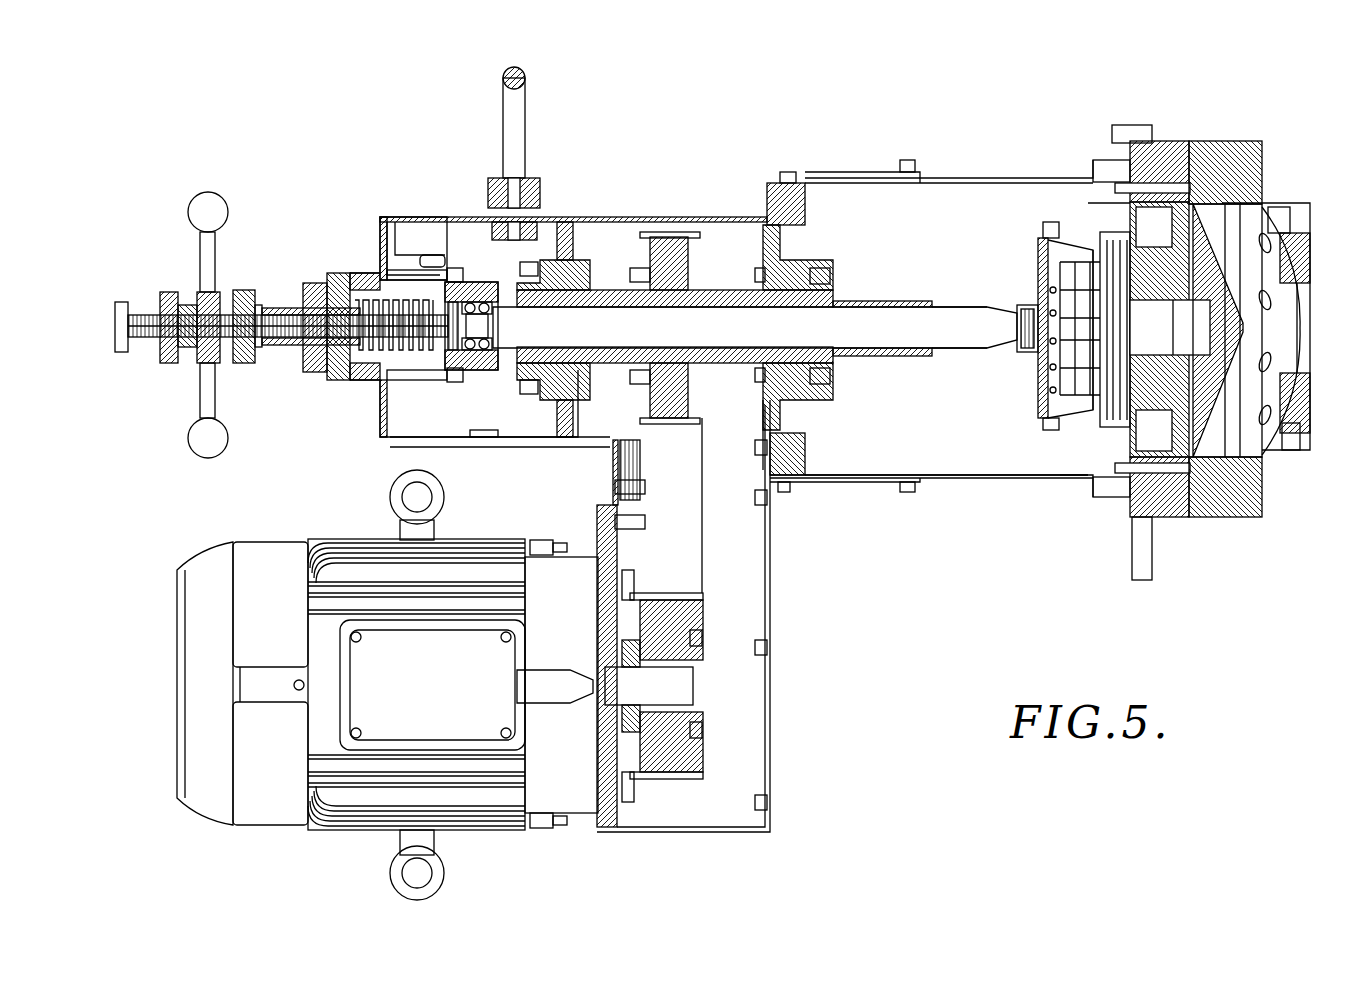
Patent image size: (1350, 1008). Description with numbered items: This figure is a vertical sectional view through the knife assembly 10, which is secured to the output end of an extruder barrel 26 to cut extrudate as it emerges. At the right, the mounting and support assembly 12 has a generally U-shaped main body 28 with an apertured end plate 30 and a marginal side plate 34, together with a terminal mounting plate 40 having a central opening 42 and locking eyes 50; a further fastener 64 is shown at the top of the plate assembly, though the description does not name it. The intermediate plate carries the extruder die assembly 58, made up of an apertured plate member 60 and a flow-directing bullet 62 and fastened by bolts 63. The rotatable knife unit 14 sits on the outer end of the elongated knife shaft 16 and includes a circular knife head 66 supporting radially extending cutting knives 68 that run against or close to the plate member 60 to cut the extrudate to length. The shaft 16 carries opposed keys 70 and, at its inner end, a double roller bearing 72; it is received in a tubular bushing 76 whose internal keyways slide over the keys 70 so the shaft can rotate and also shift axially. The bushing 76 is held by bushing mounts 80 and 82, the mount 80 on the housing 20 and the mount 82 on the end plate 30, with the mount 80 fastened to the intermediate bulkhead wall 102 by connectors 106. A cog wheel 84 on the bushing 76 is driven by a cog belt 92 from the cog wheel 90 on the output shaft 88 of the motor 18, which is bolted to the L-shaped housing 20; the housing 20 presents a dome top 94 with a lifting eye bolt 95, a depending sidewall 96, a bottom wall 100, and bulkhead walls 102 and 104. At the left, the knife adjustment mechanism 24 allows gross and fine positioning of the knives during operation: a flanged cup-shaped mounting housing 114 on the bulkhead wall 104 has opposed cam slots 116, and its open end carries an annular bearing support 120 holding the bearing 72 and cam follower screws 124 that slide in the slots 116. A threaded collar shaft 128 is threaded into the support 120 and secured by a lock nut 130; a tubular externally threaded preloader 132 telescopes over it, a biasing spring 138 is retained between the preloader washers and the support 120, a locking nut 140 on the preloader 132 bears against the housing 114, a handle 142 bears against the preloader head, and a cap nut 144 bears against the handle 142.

The knife assembly 10 is at (1145, 638).
The mounting and support assembly 12 is at (947, 153).
The rotatable knife unit 14 is at (1018, 240).
The knife shaft 16 is at (955, 352).
The motor 18 is at (205, 540).
The housing 20 is at (708, 203).
The knife adjustment mechanism 24 is at (265, 198).
The extruder barrel 26 is at (1300, 195).
The main body 28 is at (1000, 478).
The end plate 30 is at (800, 455).
The side plate 34 is at (935, 480).
The terminal mounting plate 40 is at (1205, 150).
The central opening 42 is at (1275, 215).
The locking eyes 50 is at (1100, 165).
The extruder die assembly 58 is at (1260, 420).
The apertured plate member 60 is at (1185, 480).
The flow-directing bullet 62 is at (1243, 328).
The bolts 63 is at (1158, 185).
The bolt 64 is at (1125, 128).
The knife head 66 is at (1040, 285).
The cutting knives 68 is at (1103, 230).
The keys 70 is at (588, 323).
The double roller bearing 72 is at (492, 332).
The tubular bushing 76 is at (880, 300).
The bushing mount 80 is at (590, 238).
The bushing mount 82 is at (812, 250).
The cog wheel 84 is at (672, 240).
The output shaft 88 is at (688, 683).
The cog wheel 90 is at (688, 746).
The cog belt 92 is at (705, 497).
The dome top 94 is at (633, 216).
The lifting eye bolt 95 is at (520, 105).
The sidewall 96 is at (770, 560).
The bottom wall 100 is at (395, 445).
The intermediate bulkhead wall 102 is at (603, 450).
The terminal bulkhead wall 104 is at (384, 245).
The connectors 106 is at (558, 420).
The mounting housing 114 is at (340, 385).
The cam slots 116 is at (418, 278).
The annular bearing support 120 is at (492, 385).
The cam follower screws 124 is at (455, 272).
The threaded collar shaft 128 is at (150, 315).
The lock nut 130 is at (428, 343).
The preloader 132 is at (280, 302).
The biasing spring 138 is at (375, 292).
The locking nut 140 is at (318, 372).
The handle 142 is at (205, 255).
The cap nut 144 is at (168, 360).